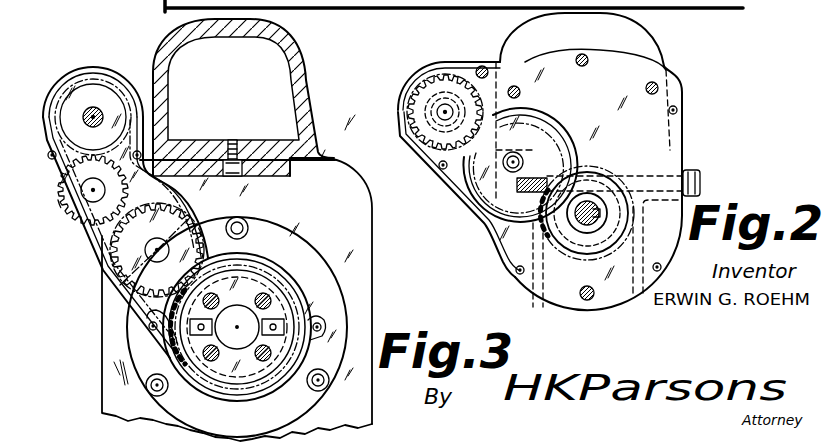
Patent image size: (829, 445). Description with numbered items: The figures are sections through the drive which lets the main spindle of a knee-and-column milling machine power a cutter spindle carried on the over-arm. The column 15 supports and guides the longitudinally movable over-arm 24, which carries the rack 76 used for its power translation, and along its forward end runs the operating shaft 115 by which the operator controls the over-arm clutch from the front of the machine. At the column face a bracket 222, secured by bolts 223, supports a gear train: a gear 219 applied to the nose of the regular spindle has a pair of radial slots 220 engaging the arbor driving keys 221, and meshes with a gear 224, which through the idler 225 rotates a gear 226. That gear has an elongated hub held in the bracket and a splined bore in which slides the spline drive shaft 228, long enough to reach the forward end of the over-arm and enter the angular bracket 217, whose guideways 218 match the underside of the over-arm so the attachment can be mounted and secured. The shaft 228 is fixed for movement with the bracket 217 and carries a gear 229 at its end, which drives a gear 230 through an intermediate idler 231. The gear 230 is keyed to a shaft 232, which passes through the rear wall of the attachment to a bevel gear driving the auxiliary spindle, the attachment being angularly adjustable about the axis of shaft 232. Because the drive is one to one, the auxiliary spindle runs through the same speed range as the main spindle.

In FIG. 3, the column 15 is at (362, 246).
In FIG. 3, the over-arm 24 is at (312, 82).
In FIG. 2, the over-arm 24 is at (641, 42).
In FIG. 3, the rack 76 is at (244, 177).
In FIG. 3, the operating shaft 115 is at (100, 115).
In FIG. 2, the angular bracket 217 is at (665, 245).
In FIG. 2, the guideways 218 is at (668, 157).
In FIG. 3, the gear 219 is at (300, 306).
In FIG. 3, the radial slots 220 is at (286, 333).
In FIG. 3, the arbor driving keys 221 is at (283, 313).
In FIG. 3, the bracket 222 is at (100, 262).
In FIG. 3, the bolts 223 is at (340, 376).
In FIG. 3, the gear 224 is at (97, 300).
In FIG. 3, the idler 225 is at (80, 208).
In FIG. 3, the gear 226 is at (103, 85).
In FIG. 2, the spline drive shaft 228 is at (440, 110).
In FIG. 2, the gear 229 is at (412, 122).
In FIG. 2, the gear 230 is at (566, 222).
In FIG. 2, the intermediate idler 231 is at (480, 172).
In FIG. 2, the shaft 232 is at (577, 217).